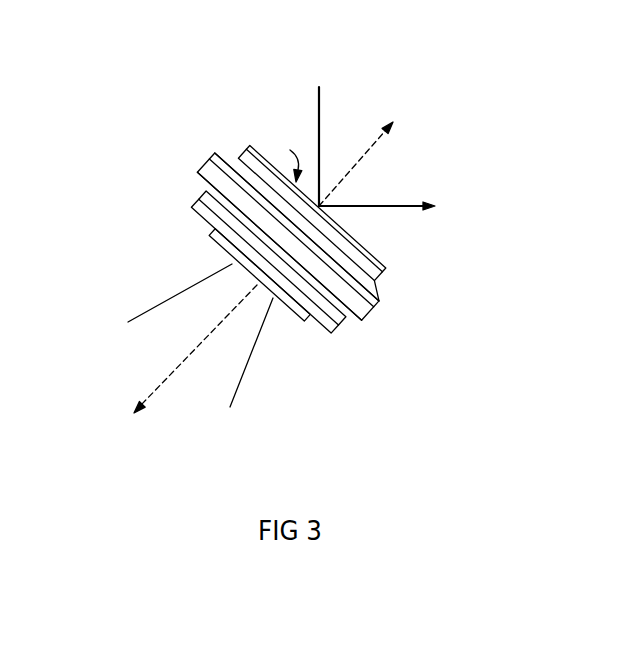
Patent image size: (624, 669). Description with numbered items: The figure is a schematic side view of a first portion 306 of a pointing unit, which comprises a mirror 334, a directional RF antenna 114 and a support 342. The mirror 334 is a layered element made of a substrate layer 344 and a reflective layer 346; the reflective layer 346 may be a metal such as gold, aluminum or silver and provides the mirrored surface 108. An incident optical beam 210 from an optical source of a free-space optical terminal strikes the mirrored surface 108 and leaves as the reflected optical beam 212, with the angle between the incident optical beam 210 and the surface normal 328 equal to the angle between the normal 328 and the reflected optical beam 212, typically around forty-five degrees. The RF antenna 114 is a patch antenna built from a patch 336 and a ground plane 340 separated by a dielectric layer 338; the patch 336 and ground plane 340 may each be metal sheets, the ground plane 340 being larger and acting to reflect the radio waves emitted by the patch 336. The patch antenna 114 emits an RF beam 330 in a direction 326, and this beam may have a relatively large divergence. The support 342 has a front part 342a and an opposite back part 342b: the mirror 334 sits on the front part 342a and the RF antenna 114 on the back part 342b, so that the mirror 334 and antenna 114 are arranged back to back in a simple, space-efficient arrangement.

The first portion 306 is at (117, 88).
The mirror 334 is at (192, 140).
The reflective layer 346 is at (386, 270).
The substrate layer 344 is at (382, 274).
The support 342 is at (372, 307).
The front part 342a is at (222, 155).
The back part 342b is at (200, 180).
The directional RF antenna 114 is at (152, 197).
The ground plane 340 is at (350, 322).
The dielectric layer 338 is at (342, 332).
The patch 336 is at (307, 320).
The mirrored surface 108 is at (292, 153).
The optical beam 210 is at (320, 102).
The reflected optical beam 212 is at (397, 207).
The surface normal 328 is at (375, 137).
The direction 326 is at (163, 389).
The RF beam 330 is at (242, 352).